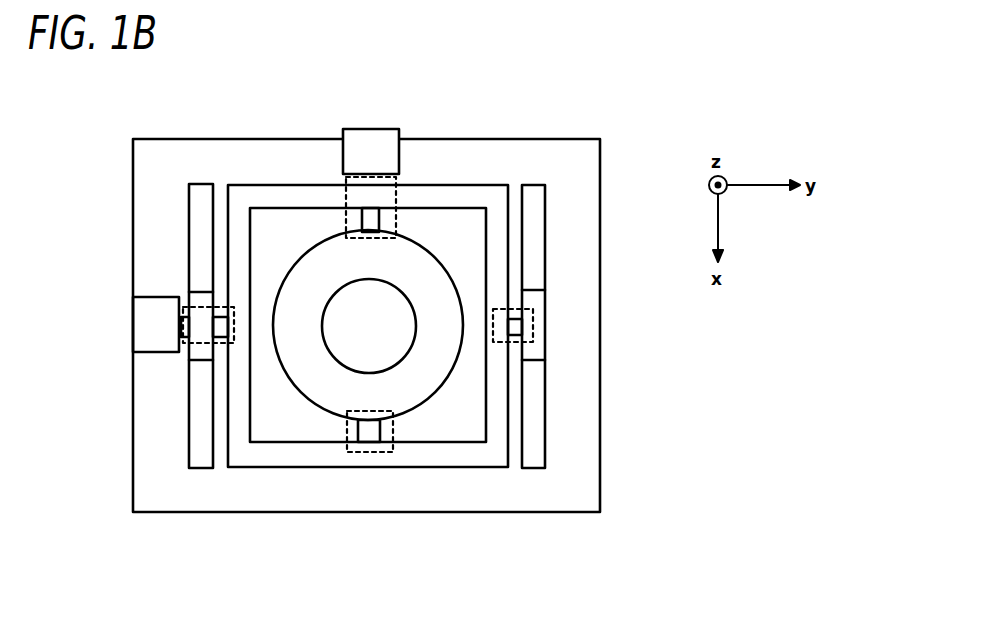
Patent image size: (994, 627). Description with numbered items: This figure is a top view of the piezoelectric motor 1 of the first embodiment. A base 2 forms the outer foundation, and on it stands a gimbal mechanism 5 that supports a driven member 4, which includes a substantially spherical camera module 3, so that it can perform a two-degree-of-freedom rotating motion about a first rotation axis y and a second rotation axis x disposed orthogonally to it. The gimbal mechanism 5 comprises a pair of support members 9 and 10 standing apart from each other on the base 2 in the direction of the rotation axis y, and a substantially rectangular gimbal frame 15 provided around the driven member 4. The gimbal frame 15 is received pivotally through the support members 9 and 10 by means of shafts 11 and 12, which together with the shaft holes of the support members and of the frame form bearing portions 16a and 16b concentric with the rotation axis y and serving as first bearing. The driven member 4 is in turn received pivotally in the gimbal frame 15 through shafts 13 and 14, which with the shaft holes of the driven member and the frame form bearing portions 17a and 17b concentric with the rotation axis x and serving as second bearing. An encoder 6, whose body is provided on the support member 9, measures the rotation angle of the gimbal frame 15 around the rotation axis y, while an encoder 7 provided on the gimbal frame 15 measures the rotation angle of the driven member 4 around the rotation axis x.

The piezoelectric motor 1 is at (673, 128).
The base 2 is at (232, 514).
The camera module 3 is at (390, 338).
The driven member 4 is at (302, 283).
The gimbal mechanism 5 is at (320, 474).
The encoder 6 is at (157, 349).
The encoder 7 is at (400, 150).
The support member 9 is at (190, 426).
The support member 10 is at (545, 395).
The shaft 11 is at (226, 300).
The shaft 12 is at (508, 312).
The shaft 13 is at (345, 222).
The shaft 14 is at (383, 430).
The gimbal frame 15 is at (478, 186).
The bearing portion 16a is at (185, 310).
The bearing portion 16b is at (533, 333).
The bearing portion 17a is at (345, 200).
The bearing portion 17b is at (363, 453).